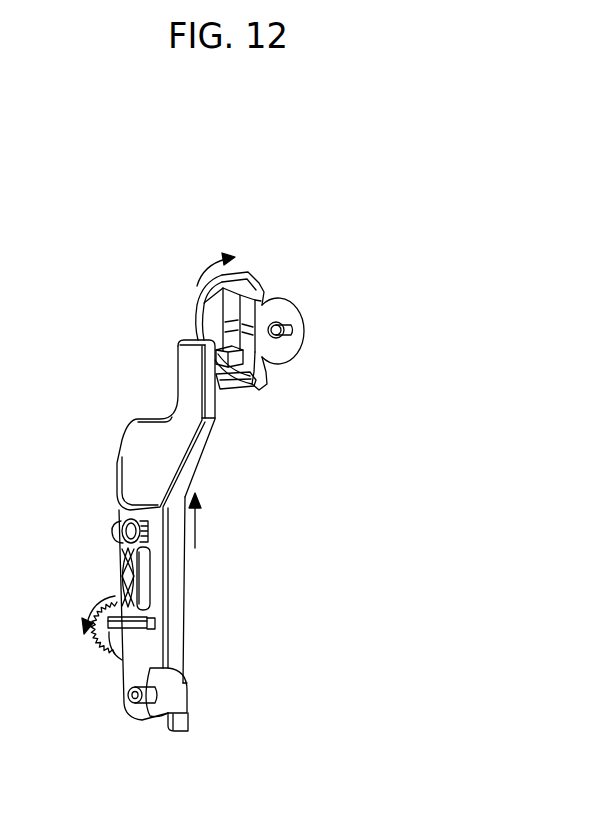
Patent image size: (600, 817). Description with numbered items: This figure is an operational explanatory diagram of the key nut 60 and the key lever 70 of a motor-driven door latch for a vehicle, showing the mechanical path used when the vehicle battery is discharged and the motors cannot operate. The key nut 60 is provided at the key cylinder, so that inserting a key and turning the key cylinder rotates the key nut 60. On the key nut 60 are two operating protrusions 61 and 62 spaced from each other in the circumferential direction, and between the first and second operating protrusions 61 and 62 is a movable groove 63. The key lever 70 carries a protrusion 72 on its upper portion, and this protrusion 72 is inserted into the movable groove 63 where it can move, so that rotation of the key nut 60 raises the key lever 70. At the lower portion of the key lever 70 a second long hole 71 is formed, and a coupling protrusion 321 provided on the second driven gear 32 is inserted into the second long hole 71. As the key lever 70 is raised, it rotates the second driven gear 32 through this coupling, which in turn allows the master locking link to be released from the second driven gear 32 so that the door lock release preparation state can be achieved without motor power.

The key lever 70 is at (177, 641).
The second long hole 71 is at (162, 667).
The coupling protrusion 321 is at (128, 695).
The second driven gear 32 is at (190, 716).
The key nut 60 is at (298, 344).
The second operating protrusion 62 is at (263, 292).
The first operating protrusion 61 is at (268, 378).
The movable groove 63 is at (217, 313).
The protrusion 72 is at (237, 367).